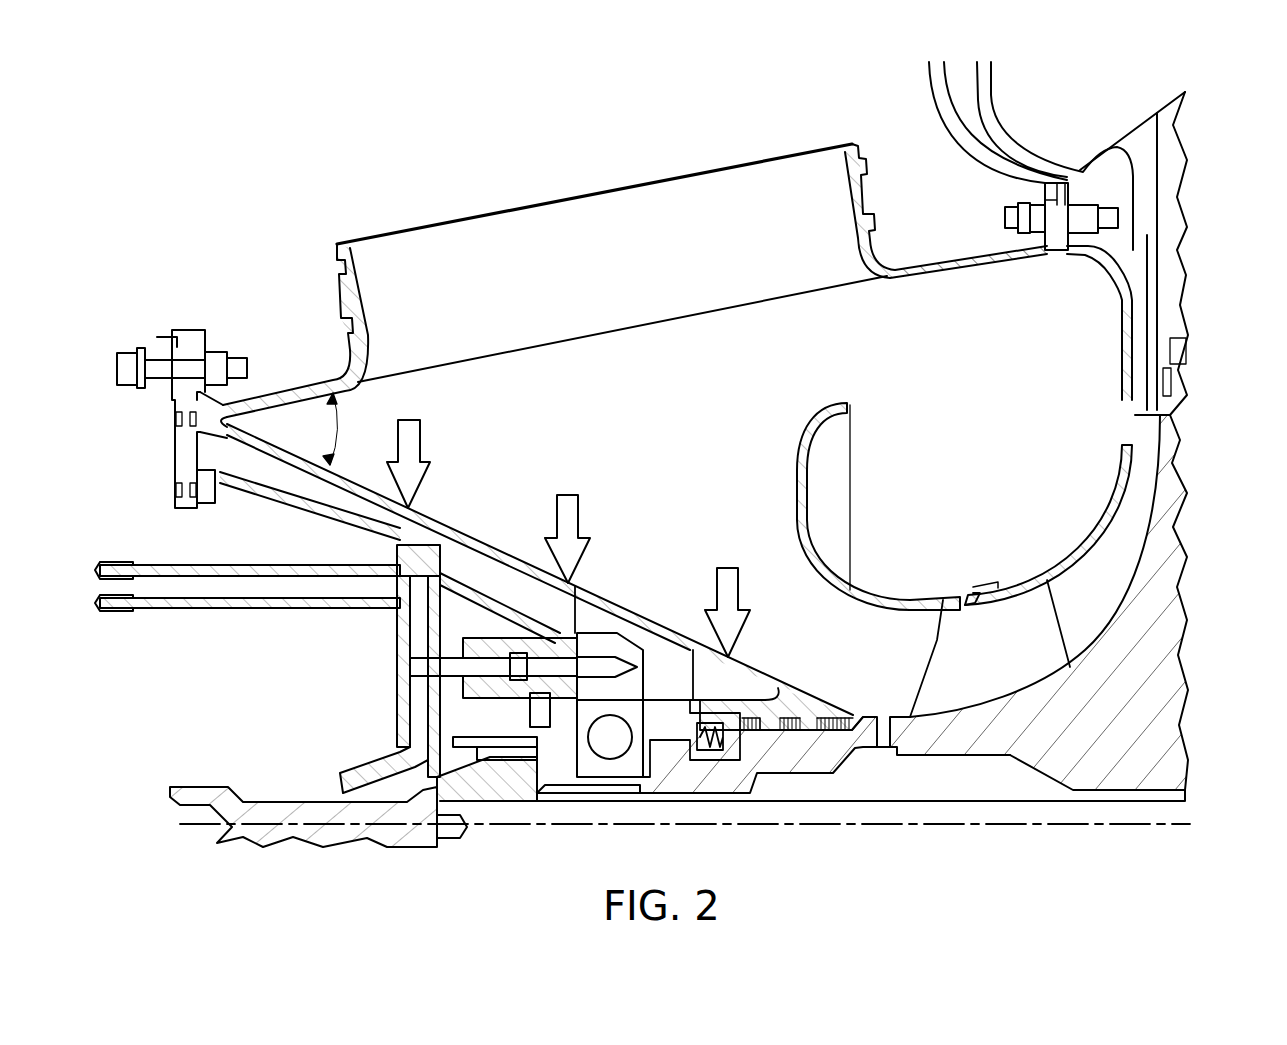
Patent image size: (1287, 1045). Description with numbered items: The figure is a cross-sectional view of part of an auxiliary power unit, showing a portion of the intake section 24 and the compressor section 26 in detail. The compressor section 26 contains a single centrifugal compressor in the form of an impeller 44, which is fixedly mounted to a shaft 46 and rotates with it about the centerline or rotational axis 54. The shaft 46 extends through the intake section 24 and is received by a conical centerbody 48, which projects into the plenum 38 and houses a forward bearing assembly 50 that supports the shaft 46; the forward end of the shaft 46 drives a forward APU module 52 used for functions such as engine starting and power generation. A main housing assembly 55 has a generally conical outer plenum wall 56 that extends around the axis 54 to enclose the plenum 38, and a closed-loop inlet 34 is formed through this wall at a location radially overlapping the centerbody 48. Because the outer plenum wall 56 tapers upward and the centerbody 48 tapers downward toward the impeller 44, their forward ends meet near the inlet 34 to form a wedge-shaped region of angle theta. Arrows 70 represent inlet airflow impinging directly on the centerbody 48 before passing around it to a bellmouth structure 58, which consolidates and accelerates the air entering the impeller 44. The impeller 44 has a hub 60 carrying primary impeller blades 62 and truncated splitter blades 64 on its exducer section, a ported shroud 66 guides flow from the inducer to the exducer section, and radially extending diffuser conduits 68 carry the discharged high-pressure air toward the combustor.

The intake section 24 is at (624, 422).
The compressor section 26 is at (733, 520).
The closed-loop inlet 34 is at (486, 215).
The plenum 38 is at (1010, 333).
The impeller 44 is at (908, 715).
The shaft 46 is at (1180, 812).
The centerbody 48 is at (470, 535).
The forward bearing assembly 50 is at (612, 748).
The forward APU module 52 is at (134, 675).
The centerline or rotational axis 54 is at (1123, 825).
The main housing assembly 55 is at (322, 375).
The outer plenum wall 56 is at (957, 262).
The bellmouth structure 58 is at (797, 460).
The hub 60 is at (1027, 760).
The primary impeller blades 62 is at (955, 625).
The truncated splitter blades 64 is at (1117, 585).
The ported shroud 66 is at (1052, 568).
The diffuser conduits 68 is at (1147, 237).
The arrows 70 is at (420, 432).